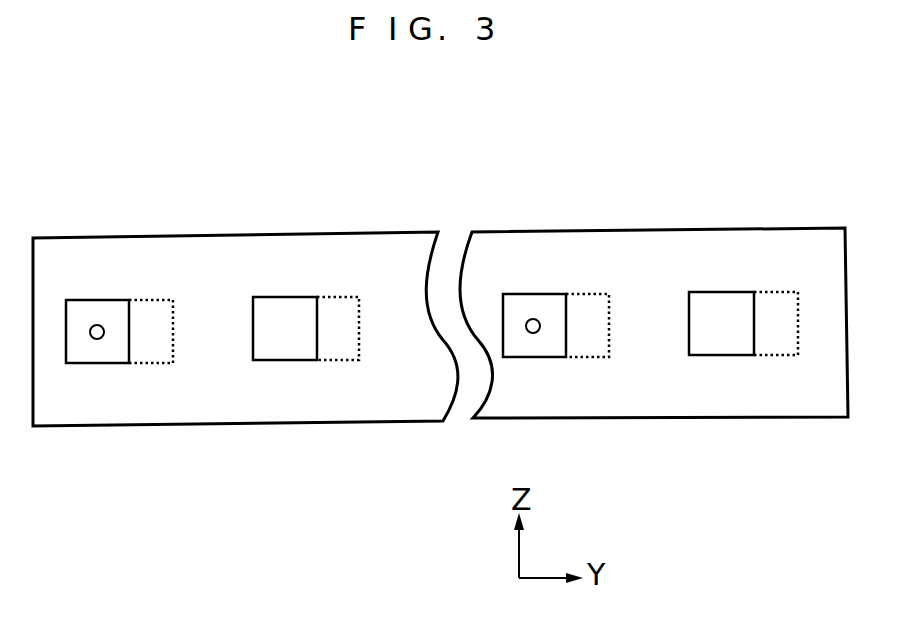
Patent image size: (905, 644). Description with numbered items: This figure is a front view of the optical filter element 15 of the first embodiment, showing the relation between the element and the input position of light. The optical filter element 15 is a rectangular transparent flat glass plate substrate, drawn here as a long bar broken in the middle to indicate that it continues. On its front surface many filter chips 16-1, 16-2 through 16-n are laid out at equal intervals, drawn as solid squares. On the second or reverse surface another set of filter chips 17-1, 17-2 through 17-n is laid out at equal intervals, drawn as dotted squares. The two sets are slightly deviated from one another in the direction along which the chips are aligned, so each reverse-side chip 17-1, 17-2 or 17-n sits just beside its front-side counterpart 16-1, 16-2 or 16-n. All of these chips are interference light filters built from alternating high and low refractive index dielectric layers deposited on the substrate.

The optical filter element 15 is at (563, 231).
The filter chip 16-1 is at (93, 300).
The filter chip 16-2 is at (290, 297).
The filter chip 16-n is at (720, 292).
The filter chip 17-1 is at (148, 363).
The filter chip 17-2 is at (342, 360).
The filter chip 17-n is at (782, 355).